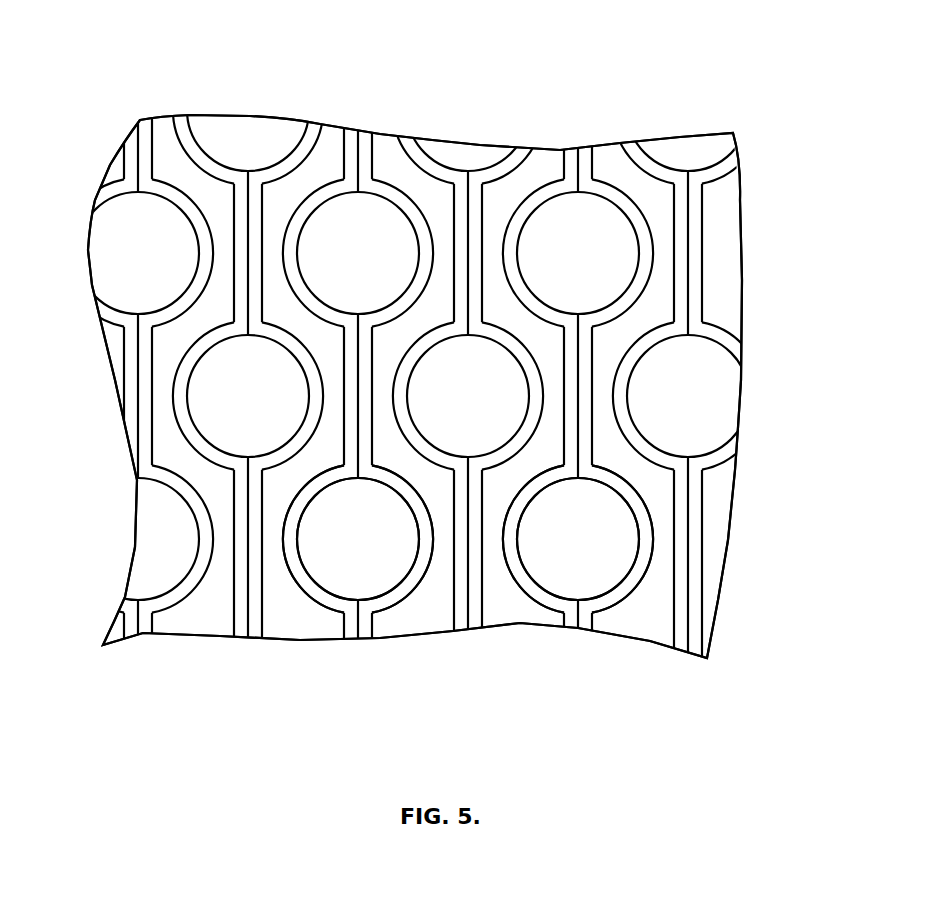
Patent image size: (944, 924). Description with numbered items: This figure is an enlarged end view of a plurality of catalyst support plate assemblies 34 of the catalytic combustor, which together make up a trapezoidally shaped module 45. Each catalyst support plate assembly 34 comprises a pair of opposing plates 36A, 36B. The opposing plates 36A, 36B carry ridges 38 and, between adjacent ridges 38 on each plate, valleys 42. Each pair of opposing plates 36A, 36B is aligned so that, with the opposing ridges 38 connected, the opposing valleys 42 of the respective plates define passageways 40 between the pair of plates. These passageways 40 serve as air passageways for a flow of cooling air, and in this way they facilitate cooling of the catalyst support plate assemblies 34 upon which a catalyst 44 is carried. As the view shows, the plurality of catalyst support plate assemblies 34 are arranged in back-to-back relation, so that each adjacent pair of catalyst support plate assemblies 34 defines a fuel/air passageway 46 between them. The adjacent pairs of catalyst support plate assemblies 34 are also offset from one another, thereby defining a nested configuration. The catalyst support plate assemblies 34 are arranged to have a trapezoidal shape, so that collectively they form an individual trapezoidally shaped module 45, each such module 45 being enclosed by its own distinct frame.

The catalyst support plate assembly 34 is at (343, 141).
The opposing plate 36A is at (245, 607).
The opposing plate 36B is at (255, 623).
The ridge 38 is at (563, 623).
The passageway 40 is at (138, 257).
The valley 42 is at (393, 598).
The catalyst 44 is at (175, 185).
The trapezoidally shaped module 45 is at (660, 48).
The fuel/air passageway 46 is at (285, 200).